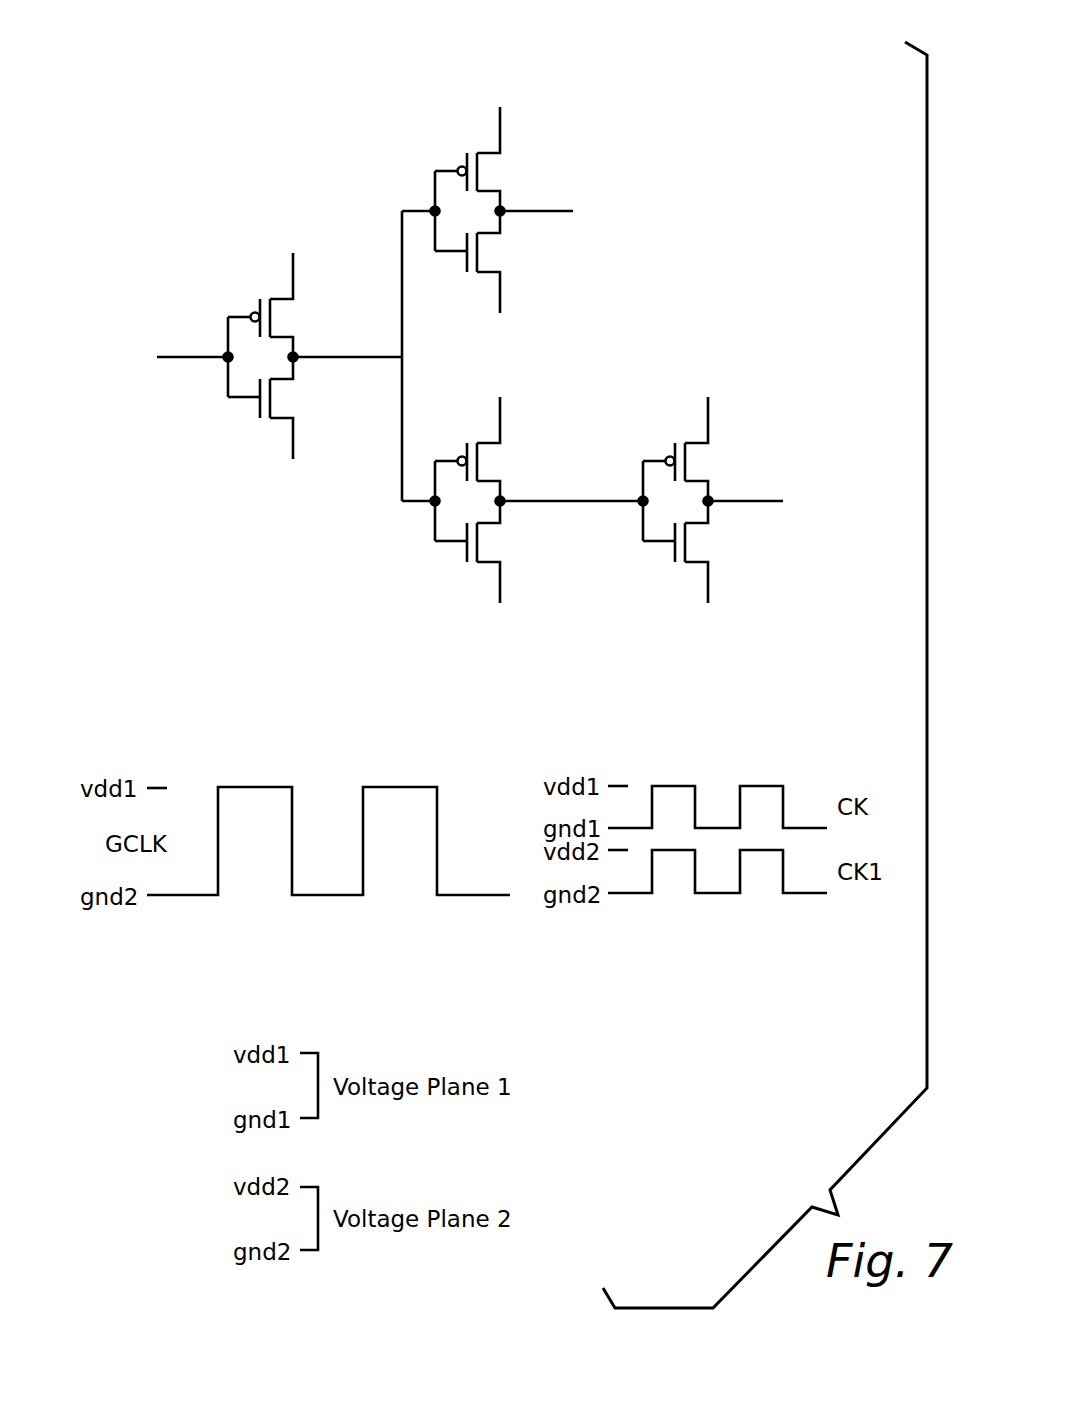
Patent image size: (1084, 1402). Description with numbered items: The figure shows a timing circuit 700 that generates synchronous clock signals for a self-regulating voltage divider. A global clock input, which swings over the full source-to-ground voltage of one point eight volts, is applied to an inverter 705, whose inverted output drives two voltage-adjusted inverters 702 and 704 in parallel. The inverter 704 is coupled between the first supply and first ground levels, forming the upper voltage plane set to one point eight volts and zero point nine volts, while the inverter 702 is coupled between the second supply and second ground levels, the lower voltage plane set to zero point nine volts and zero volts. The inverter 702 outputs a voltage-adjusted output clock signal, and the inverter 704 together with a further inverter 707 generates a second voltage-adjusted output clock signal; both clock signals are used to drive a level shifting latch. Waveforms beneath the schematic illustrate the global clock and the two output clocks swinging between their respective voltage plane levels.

The timing circuit 700 is at (548, 33).
The inverter 702 is at (424, 152).
The inverter 704 is at (424, 561).
The inverter 705 is at (217, 297).
The inverter 707 is at (633, 561).